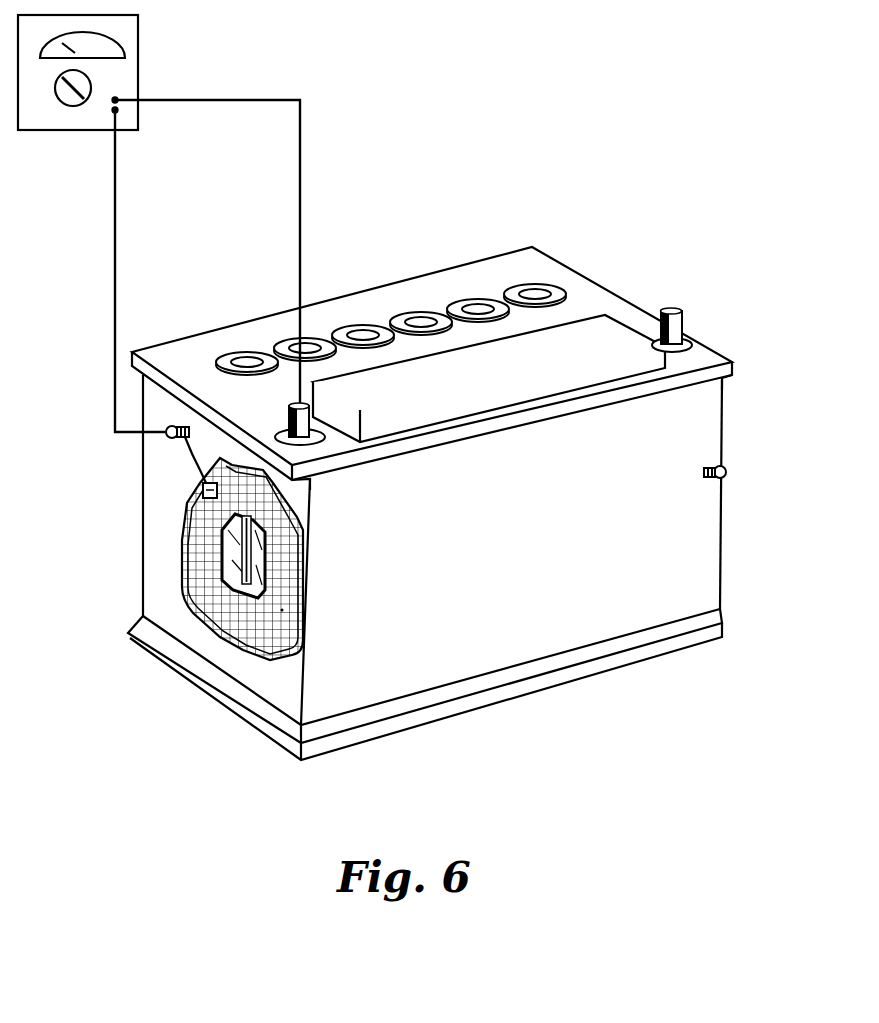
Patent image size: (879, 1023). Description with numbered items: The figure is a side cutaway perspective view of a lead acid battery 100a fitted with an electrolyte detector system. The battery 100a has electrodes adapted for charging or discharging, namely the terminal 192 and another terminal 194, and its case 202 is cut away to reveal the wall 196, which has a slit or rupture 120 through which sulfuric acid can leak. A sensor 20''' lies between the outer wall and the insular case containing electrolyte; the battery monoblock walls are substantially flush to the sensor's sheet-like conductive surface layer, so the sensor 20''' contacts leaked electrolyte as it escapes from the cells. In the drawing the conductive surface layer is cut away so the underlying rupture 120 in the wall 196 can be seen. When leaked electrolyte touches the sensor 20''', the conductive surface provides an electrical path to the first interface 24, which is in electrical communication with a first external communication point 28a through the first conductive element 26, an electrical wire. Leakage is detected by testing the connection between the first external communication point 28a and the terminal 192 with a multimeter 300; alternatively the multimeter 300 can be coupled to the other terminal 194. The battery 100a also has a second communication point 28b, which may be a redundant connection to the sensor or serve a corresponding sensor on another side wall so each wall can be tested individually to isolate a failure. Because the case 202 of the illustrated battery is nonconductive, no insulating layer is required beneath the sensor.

The multimeter 300 is at (140, 48).
The electrode 194 is at (675, 312).
The terminal 192 is at (303, 437).
The first external communication point 28a is at (158, 437).
The second communication point 28b is at (722, 462).
The first conductive element 26 is at (190, 458).
The first interface 24 is at (203, 493).
The case 202 is at (222, 572).
The wall 196 is at (232, 583).
The slit or rupture 120 is at (240, 590).
The sensor 20''' is at (362, 701).
The lead acid battery 100a is at (532, 557).